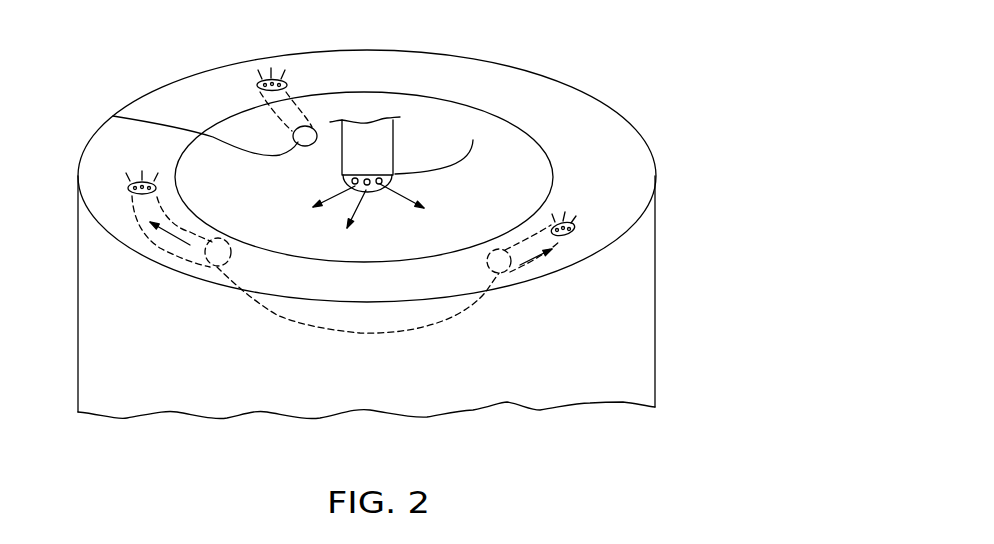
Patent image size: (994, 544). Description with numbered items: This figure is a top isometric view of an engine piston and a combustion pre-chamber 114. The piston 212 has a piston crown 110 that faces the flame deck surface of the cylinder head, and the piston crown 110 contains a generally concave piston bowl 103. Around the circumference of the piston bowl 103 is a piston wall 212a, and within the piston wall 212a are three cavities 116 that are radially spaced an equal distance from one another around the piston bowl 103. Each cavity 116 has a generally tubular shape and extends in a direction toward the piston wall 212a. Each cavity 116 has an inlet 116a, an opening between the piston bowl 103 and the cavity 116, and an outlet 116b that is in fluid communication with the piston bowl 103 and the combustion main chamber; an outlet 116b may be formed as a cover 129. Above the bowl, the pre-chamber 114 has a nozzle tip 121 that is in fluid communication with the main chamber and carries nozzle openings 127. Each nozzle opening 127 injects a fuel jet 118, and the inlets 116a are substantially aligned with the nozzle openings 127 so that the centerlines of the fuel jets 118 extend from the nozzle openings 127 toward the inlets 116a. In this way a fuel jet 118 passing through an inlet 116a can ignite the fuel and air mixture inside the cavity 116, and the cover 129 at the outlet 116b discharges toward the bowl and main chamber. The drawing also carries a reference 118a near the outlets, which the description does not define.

The piston bowl 103 is at (292, 324).
The piston crown 110 is at (597, 143).
The combustion pre-chamber 114 is at (368, 133).
The cavity 116 is at (270, 122).
The inlet 116a is at (113, 116).
The outlet 116b is at (270, 79).
The fuel jet 118 is at (553, 215).
The nozzle spray openings 118a is at (285, 73).
The nozzle tip 121 is at (473, 140).
The nozzle opening 127 is at (388, 175).
The cover 129 is at (572, 240).
The piston 212 is at (607, 338).
The piston wall 212a is at (637, 375).